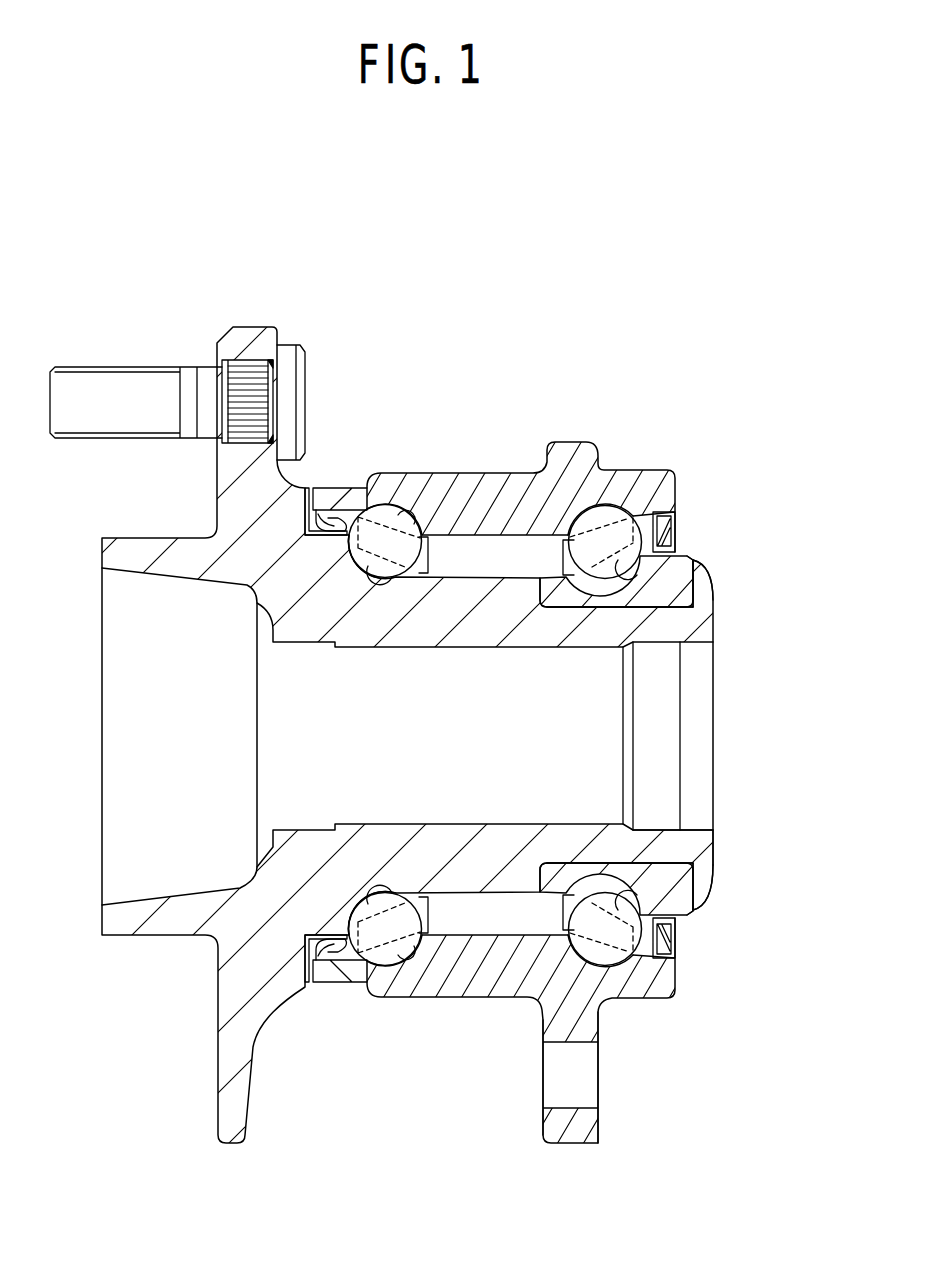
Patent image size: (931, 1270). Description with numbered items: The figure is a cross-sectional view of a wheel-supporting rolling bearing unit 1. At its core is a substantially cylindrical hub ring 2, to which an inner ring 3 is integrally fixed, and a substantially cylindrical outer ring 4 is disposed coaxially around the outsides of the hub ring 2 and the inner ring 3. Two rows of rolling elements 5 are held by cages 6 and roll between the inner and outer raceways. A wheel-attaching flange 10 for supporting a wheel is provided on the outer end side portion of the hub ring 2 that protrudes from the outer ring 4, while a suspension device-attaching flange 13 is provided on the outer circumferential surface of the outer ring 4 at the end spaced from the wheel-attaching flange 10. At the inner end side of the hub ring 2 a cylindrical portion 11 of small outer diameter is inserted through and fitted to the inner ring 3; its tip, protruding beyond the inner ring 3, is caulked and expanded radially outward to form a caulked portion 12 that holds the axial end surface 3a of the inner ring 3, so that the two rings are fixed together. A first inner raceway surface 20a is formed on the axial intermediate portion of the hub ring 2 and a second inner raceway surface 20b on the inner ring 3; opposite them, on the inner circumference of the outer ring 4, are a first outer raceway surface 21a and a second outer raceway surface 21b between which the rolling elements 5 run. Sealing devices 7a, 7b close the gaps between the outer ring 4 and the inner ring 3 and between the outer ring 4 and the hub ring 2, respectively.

The wheel-supporting rolling bearing unit 1 is at (522, 347).
The hub ring 2 is at (140, 548).
The inner ring 3 is at (600, 600).
The axial end surface 3a is at (697, 583).
The outer ring 4 is at (476, 488).
The rolling elements 5 is at (367, 515).
The cages 6 is at (442, 905).
The sealing device 7a is at (678, 523).
The sealing device 7b is at (322, 505).
The wheel-attaching flange 10 is at (252, 340).
The cylindrical portion 11 is at (622, 847).
The caulked portion 12 is at (713, 643).
The suspension device-attaching flange 13 is at (590, 1123).
The first inner raceway surface 20a is at (392, 580).
The second inner raceway surface 20b is at (677, 623).
The first outer raceway surface 21a is at (397, 520).
The second outer raceway surface 21b is at (620, 512).